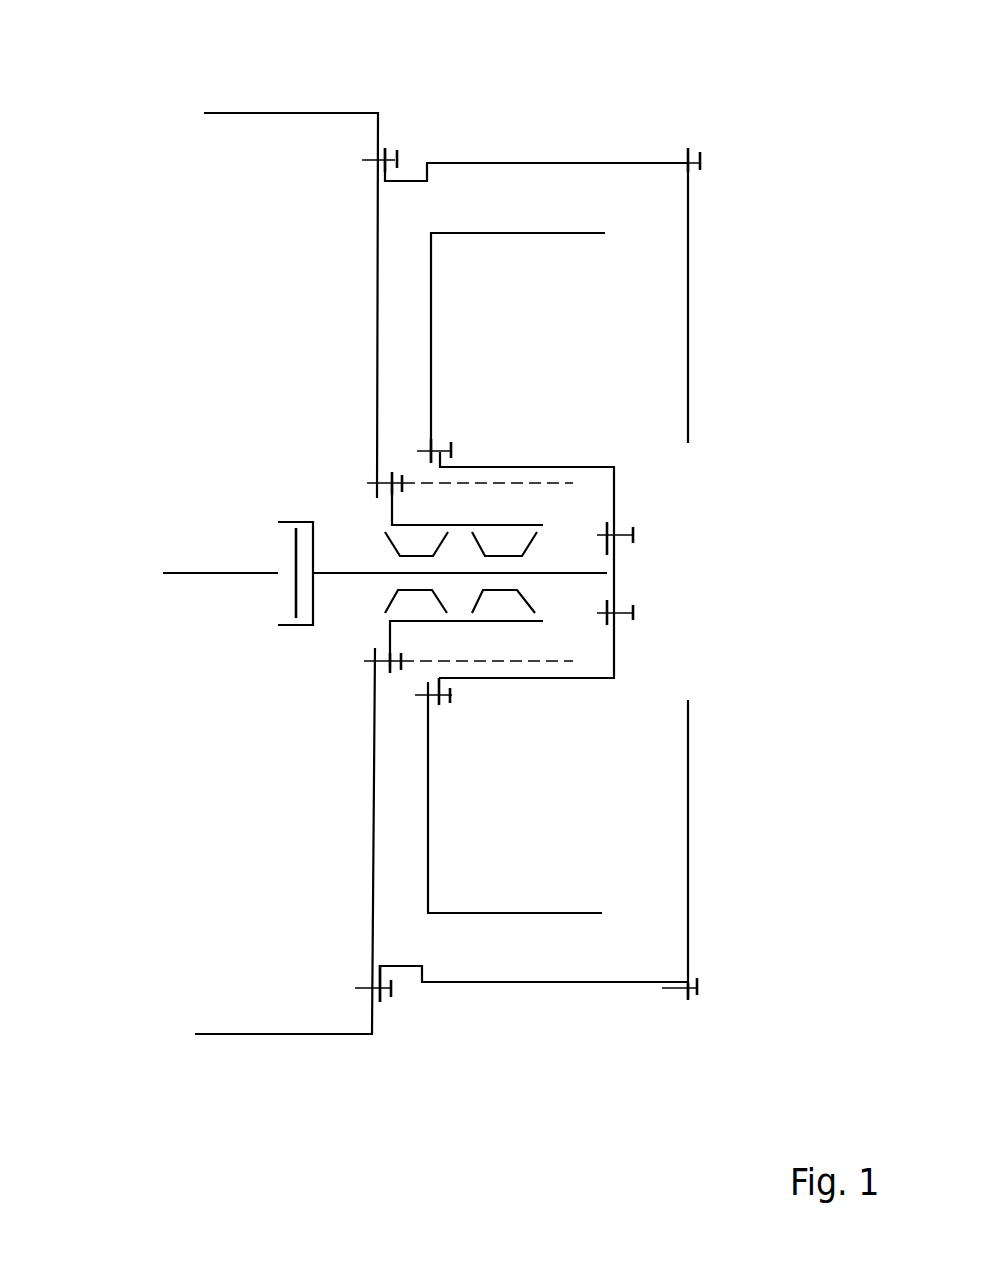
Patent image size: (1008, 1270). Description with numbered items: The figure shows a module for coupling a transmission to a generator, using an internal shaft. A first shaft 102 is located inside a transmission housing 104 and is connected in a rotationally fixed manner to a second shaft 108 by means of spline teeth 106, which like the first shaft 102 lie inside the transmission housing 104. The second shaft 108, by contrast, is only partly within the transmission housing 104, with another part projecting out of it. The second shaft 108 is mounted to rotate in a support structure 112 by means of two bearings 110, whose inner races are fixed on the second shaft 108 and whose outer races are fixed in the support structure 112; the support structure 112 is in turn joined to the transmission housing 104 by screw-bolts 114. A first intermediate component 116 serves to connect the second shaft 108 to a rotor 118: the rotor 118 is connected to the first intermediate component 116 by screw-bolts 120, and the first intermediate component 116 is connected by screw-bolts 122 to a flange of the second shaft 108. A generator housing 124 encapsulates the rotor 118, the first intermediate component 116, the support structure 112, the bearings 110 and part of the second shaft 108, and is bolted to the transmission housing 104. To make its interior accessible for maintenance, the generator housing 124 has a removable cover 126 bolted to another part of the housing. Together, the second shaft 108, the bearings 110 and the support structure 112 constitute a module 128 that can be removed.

The first shaft 102 is at (232, 573).
The transmission housing 104 is at (283, 113).
The spline teeth 106 is at (293, 625).
The second shaft 108 is at (355, 575).
The bearings 110 is at (503, 540).
The support structure 112 is at (523, 621).
The screw-bolts 114 is at (400, 664).
The first intermediate component 116 is at (530, 467).
The rotor 118 is at (488, 233).
The screw-bolts 120 is at (452, 443).
The screw-bolts 122 is at (634, 527).
The generator housing 124 is at (463, 163).
The removable cover 126 is at (688, 852).
The module 128 is at (518, 706).